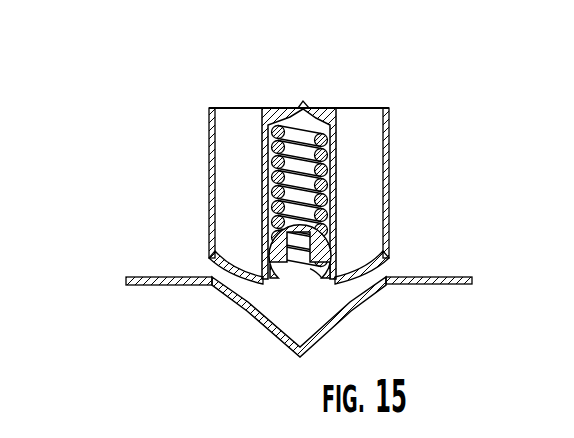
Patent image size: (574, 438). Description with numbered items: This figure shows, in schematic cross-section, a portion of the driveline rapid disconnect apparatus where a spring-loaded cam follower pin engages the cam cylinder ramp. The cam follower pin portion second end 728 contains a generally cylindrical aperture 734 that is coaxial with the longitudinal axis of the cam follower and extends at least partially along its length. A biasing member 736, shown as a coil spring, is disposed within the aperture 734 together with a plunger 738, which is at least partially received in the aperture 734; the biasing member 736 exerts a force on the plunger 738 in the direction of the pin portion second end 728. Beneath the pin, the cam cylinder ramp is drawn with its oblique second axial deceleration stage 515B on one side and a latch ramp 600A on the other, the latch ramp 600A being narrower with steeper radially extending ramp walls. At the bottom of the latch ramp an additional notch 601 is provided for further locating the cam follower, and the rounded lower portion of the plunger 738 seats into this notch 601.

The pin portion second end 728 is at (360, 240).
The cylindrical aperture 734 is at (337, 172).
The biasing member 736 is at (270, 190).
The plunger 738 is at (285, 300).
The second axial deceleration stage 515B is at (168, 277).
The latch ramp 600A is at (378, 288).
The notch 601 is at (283, 337).